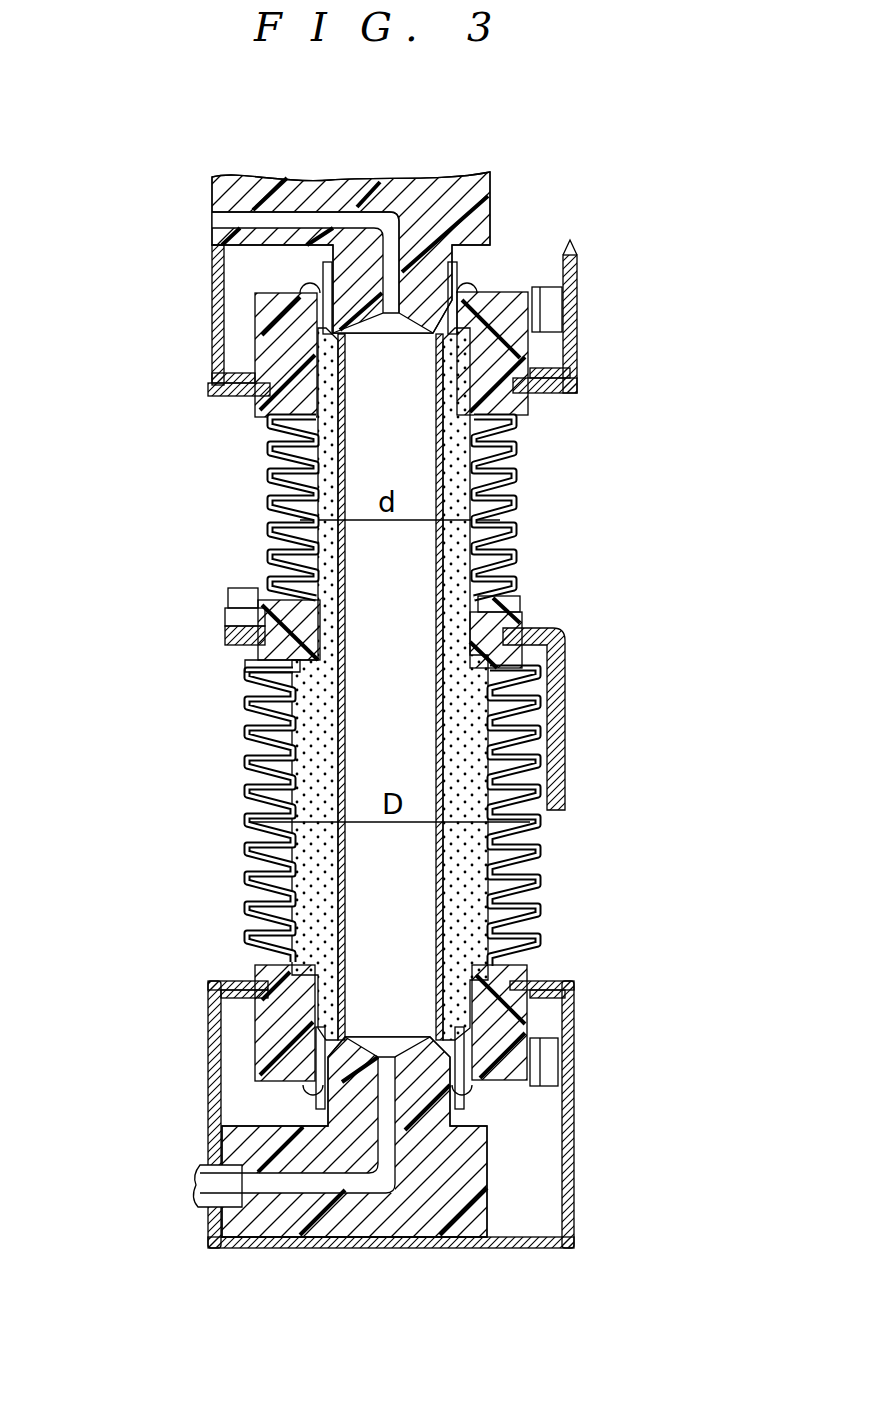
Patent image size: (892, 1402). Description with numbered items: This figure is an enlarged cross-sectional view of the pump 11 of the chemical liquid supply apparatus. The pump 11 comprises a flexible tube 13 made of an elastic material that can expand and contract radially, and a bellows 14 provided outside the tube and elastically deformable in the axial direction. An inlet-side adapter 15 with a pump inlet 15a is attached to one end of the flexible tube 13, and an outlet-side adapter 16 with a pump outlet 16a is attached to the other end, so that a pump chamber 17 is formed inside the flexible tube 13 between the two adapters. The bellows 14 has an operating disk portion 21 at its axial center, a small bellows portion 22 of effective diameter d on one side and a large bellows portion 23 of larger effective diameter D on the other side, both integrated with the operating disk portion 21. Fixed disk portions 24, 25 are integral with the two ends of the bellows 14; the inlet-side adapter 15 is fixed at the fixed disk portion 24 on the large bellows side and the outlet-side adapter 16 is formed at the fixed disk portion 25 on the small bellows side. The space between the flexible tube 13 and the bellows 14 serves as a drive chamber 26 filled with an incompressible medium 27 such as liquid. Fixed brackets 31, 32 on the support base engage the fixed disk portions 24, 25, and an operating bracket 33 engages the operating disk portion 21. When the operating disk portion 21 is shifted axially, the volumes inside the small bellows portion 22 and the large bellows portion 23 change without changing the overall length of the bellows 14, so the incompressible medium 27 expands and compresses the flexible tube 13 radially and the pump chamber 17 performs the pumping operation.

The pump 11 is at (590, 210).
The flexible tube 13 is at (330, 773).
The bellows 14 is at (532, 565).
The inlet-side adapter 15 is at (465, 1175).
The pump inlet 15a is at (208, 1190).
The outlet-side adapter 16 is at (490, 184).
The pump outlet 16a is at (350, 228).
The pump chamber 17 is at (410, 677).
The operating disk portion 21 is at (522, 603).
The small bellows portion 22 is at (522, 492).
The large bellows portion 23 is at (528, 840).
The fixed disk portion 24 is at (510, 1033).
The fixed disk portion 25 is at (510, 328).
The drive chamber 26 is at (465, 905).
The incompressible medium 27 is at (310, 880).
The fixed bracket 31 is at (578, 1172).
The fixed bracket 32 is at (580, 352).
The operating bracket 33 is at (560, 695).